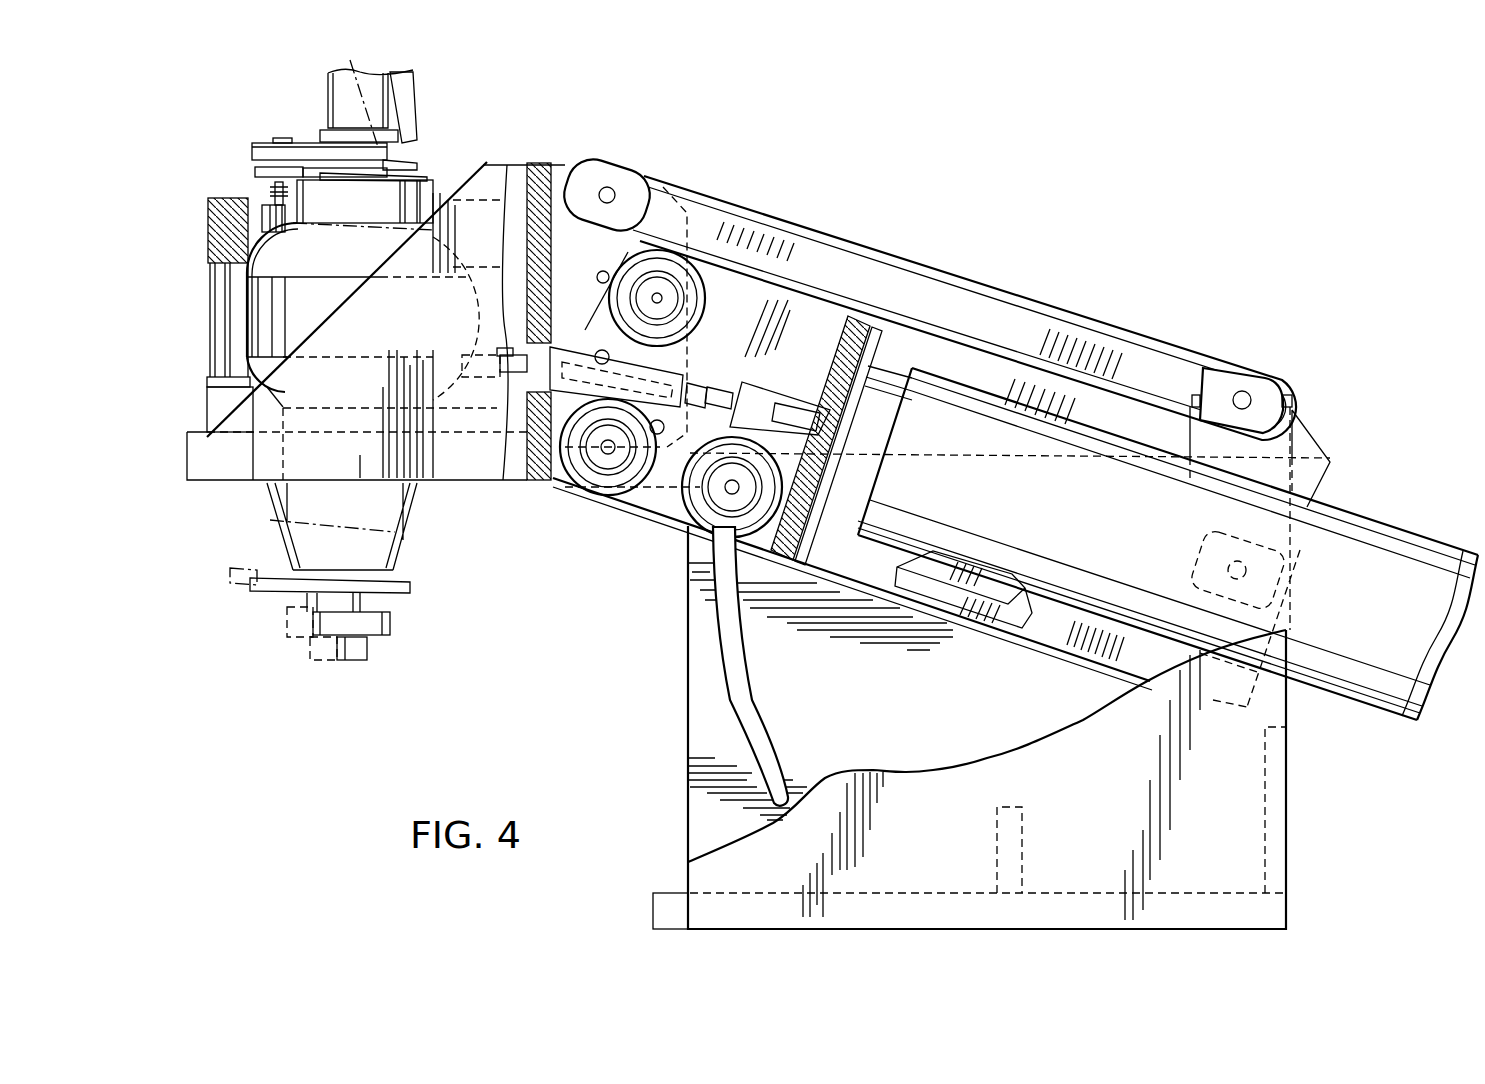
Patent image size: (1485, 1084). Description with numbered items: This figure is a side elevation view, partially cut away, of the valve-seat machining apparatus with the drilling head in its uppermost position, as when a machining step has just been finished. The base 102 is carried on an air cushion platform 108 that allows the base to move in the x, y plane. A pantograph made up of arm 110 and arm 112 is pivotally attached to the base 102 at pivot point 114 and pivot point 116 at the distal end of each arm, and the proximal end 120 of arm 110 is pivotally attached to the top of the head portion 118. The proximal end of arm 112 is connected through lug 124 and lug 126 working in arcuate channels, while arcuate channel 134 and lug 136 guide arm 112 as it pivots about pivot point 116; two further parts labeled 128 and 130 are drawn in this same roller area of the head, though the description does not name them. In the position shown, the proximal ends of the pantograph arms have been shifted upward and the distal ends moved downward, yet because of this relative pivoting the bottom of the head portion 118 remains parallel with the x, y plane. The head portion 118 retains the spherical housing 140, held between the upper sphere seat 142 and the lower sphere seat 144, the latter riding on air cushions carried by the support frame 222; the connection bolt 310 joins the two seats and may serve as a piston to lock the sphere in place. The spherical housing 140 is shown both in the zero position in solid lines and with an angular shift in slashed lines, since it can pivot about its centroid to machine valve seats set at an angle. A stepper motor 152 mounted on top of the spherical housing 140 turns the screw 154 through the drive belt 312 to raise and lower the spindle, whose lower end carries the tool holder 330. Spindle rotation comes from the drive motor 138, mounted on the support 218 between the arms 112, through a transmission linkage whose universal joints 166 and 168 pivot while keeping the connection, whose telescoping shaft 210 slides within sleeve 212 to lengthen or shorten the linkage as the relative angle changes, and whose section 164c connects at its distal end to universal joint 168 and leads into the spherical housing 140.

The base 102 is at (1252, 838).
The air cushion platform 108 is at (678, 907).
The arm 110 is at (752, 226).
The arm 112 is at (1302, 470).
The pivot point 114 is at (1246, 392).
The pivot point 116 is at (1228, 540).
The head portion 118 is at (488, 170).
The proximal end 120 is at (612, 190).
The lug 124 is at (668, 300).
The lug 126 is at (600, 470).
The pin 128 is at (612, 277).
The roller 130 is at (680, 492).
The arcuate channel 134 is at (722, 626).
The lug 136 is at (683, 546).
The drive motor 138 is at (1337, 690).
The spherical housing 140 is at (258, 313).
The sphere seat 142 is at (540, 180).
The sphere seat 144 is at (215, 395).
The stepper motor 152 is at (373, 107).
The screw 154 is at (277, 192).
The section of the transmission linkage 164c is at (465, 345).
The universal joint 166 is at (707, 386).
The universal joint 168 is at (500, 345).
The shaft 210 is at (810, 398).
The sleeve 212 is at (757, 396).
The support 218 is at (970, 590).
The support frame 222 is at (197, 478).
The connection bolt 310 is at (213, 282).
The drive belt 312 is at (320, 150).
The tool holder 330 is at (392, 623).